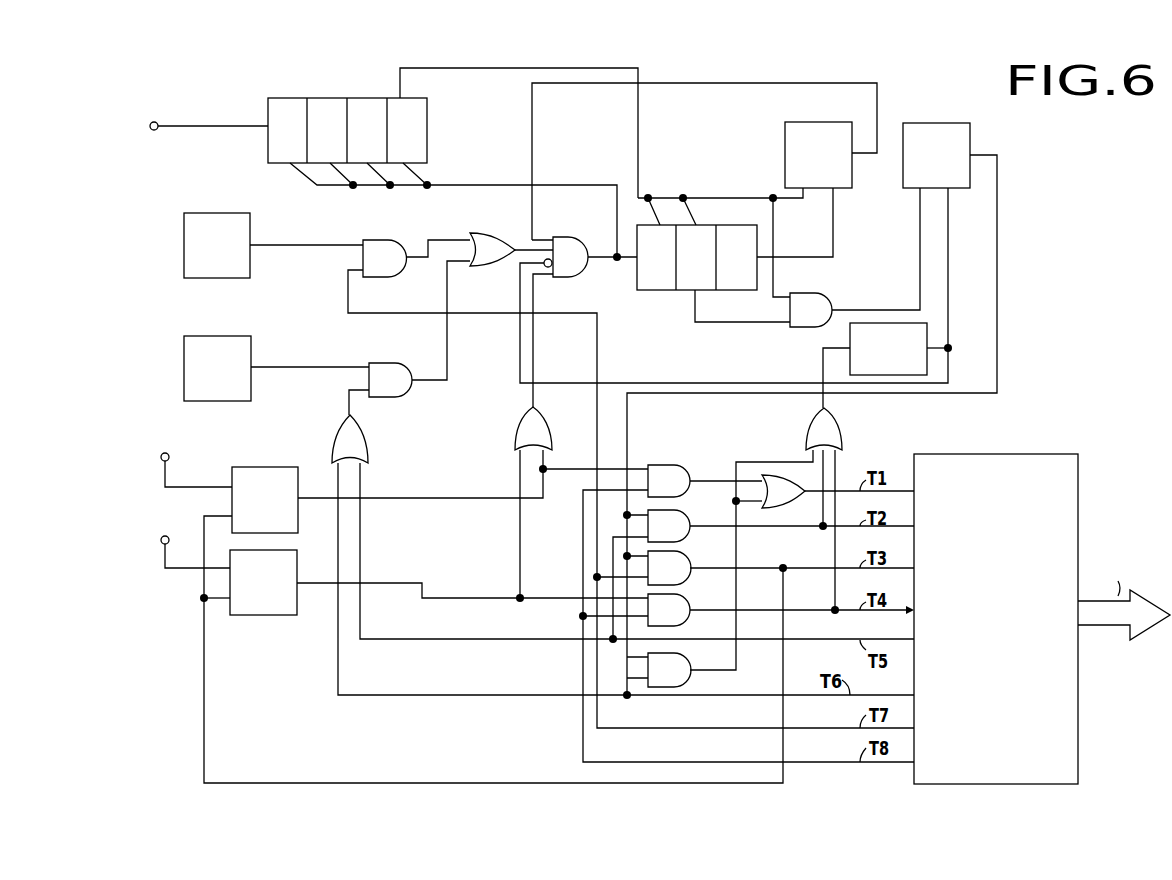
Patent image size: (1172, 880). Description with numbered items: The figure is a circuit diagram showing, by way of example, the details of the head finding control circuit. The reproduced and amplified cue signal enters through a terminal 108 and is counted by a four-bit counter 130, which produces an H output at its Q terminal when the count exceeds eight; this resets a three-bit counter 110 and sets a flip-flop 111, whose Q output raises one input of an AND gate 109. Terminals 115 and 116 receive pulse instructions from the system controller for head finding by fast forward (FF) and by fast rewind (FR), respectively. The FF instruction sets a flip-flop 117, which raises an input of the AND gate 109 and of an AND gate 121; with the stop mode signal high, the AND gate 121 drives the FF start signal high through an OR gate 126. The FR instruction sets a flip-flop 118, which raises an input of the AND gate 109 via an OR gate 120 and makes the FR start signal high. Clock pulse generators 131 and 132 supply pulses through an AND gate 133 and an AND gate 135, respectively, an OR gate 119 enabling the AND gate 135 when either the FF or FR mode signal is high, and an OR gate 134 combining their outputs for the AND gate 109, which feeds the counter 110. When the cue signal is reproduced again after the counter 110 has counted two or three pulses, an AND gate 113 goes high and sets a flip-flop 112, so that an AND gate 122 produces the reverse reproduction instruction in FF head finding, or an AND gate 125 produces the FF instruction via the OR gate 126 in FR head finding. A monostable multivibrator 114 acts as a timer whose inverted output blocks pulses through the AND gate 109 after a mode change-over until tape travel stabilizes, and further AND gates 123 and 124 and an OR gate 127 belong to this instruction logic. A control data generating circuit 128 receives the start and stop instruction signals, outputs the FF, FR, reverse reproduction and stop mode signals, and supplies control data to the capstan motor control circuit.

The terminal 108 is at (157, 120).
The AND gate 109 is at (578, 277).
The three-bit counter 110 is at (685, 290).
The flip-flop 111 is at (852, 192).
The flip-flop 112 is at (970, 190).
The AND gate 113 is at (830, 293).
The monostable multivibrator 114 is at (850, 340).
The terminal 115 is at (169, 452).
The terminal 116 is at (168, 535).
The flip-flop 117 is at (278, 467).
The flip-flop 118 is at (262, 615).
The OR gate 119 is at (368, 440).
The OR gate 120 is at (515, 435).
The AND gate 121 is at (685, 465).
The AND gate 122 is at (688, 510).
The AND gate 123 is at (688, 551).
The AND gate 124 is at (688, 594).
The AND gate 125 is at (688, 653).
The OR gate 126 is at (775, 475).
The OR gate 127 is at (842, 435).
The control data generating circuit 128 is at (1078, 765).
The four-bit counter 130 is at (340, 98).
The clock pulse generator 131 is at (250, 262).
The clock pulse generator 132 is at (252, 348).
The AND gate 133 is at (397, 277).
The OR gate 134 is at (478, 266).
The AND gate 135 is at (400, 363).